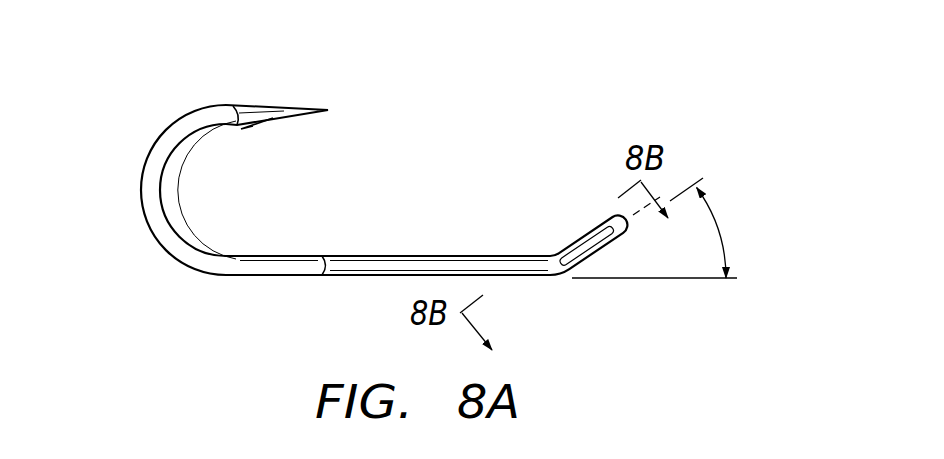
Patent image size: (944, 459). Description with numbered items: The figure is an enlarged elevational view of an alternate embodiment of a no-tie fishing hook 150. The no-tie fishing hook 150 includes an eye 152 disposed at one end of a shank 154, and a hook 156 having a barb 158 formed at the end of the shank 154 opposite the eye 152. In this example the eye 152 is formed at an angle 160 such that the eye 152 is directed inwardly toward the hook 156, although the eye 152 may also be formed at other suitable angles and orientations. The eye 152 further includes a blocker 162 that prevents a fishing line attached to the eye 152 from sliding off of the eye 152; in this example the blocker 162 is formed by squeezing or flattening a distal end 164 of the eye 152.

The no-tie fishing hook 150 is at (120, 72).
The eye 152 is at (598, 222).
The shank 154 is at (348, 278).
The hook 156 is at (143, 168).
The barb 158 is at (243, 129).
The angle 160 is at (718, 232).
The blocker 162 is at (568, 283).
The distal end 164 is at (578, 243).